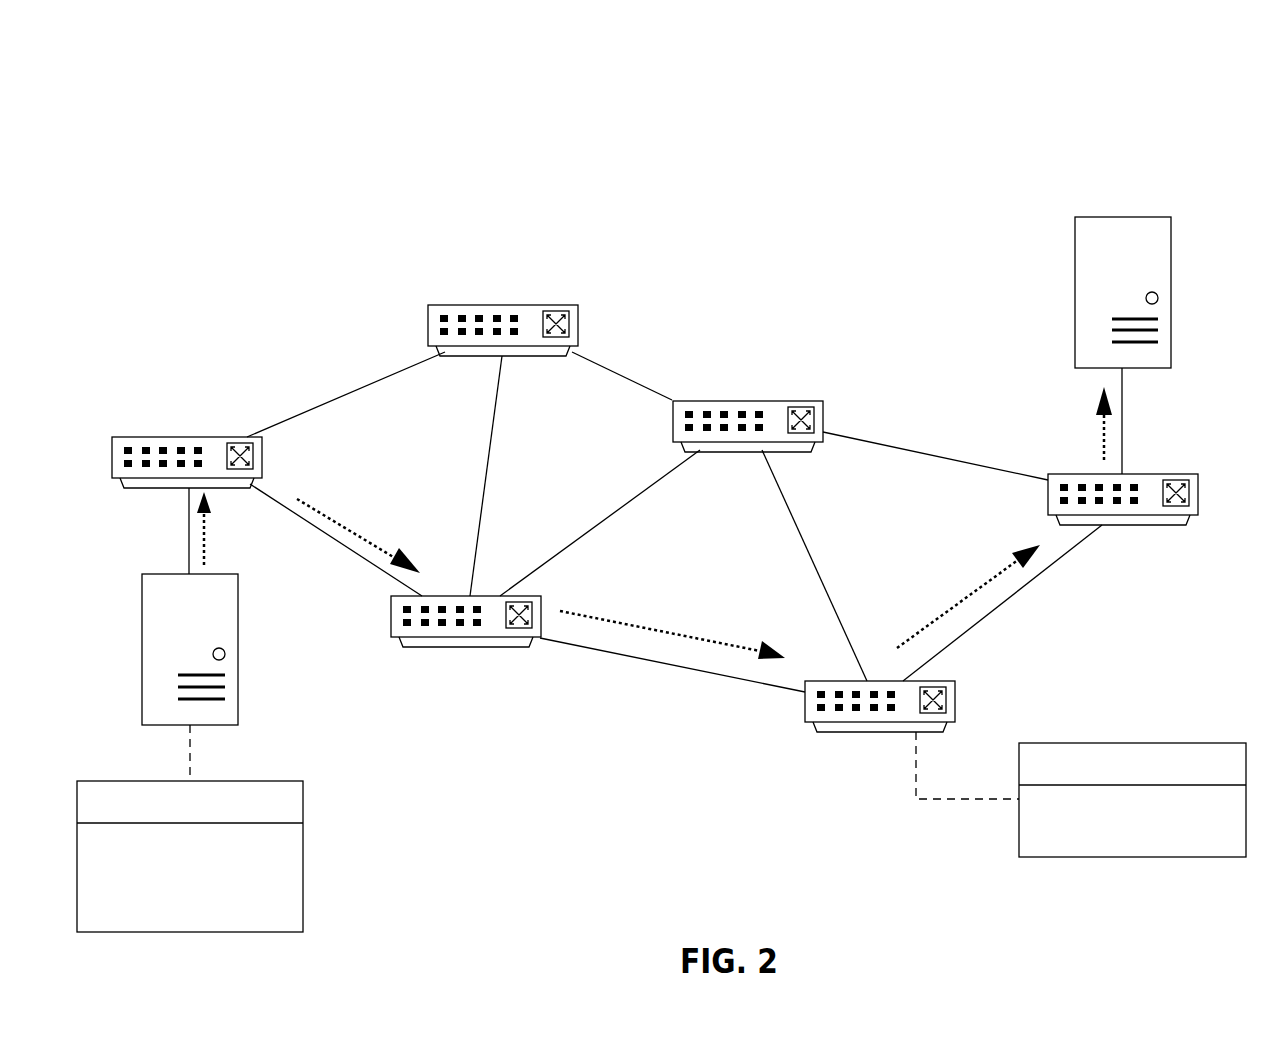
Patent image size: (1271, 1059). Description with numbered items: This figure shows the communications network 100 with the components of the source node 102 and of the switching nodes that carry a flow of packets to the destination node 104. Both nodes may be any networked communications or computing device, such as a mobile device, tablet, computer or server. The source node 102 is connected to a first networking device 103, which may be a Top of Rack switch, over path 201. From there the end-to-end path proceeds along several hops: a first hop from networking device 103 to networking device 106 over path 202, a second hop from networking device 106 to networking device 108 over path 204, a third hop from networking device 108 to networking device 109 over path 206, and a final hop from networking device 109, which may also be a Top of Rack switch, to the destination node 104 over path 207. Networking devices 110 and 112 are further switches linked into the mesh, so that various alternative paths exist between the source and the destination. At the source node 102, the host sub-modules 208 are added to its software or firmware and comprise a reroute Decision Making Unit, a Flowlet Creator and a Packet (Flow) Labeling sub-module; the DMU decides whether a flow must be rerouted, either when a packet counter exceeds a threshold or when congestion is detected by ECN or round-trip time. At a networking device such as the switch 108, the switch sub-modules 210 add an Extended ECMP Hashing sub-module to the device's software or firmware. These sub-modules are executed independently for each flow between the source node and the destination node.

The communications network 100 is at (194, 103).
The source node 102 is at (142, 590).
The first networking device 103 is at (167, 432).
The destination node 104 is at (1110, 217).
The networking device 106 is at (428, 653).
The networking device 108 is at (832, 735).
The networking device 109 is at (1123, 535).
The networking device 110 is at (527, 303).
The networking device 112 is at (737, 398).
The path 201 is at (205, 542).
The path 202 is at (338, 527).
The path 204 is at (660, 632).
The path 206 is at (962, 600).
The path 207 is at (1100, 448).
The host sub-modules 208 is at (303, 872).
The switch sub-modules 210 is at (1052, 857).